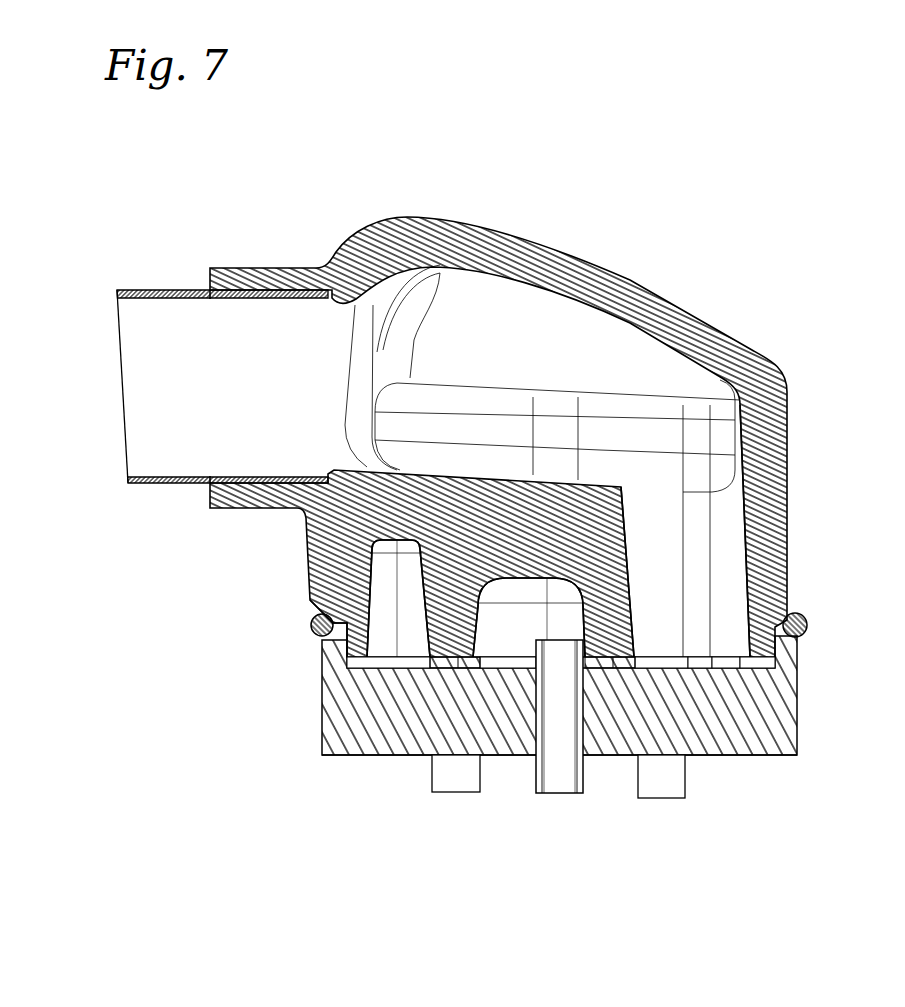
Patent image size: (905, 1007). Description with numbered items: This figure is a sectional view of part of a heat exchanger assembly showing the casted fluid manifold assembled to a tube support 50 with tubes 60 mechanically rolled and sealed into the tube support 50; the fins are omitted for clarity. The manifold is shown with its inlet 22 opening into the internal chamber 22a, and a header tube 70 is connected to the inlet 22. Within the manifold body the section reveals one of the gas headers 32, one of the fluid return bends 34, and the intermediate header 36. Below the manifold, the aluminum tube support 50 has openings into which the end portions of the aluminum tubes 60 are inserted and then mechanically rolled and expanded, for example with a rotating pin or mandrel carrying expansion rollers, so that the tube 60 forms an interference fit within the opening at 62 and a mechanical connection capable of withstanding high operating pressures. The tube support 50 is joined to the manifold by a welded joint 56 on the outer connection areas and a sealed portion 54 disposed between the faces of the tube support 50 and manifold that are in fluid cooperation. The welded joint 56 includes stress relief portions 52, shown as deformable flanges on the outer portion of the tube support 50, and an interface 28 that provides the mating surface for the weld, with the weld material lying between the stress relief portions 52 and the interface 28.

The inlet 22 is at (238, 266).
The internal chamber 22a is at (500, 307).
The header tube 70 is at (182, 290).
The intermediate header 36 is at (378, 567).
The fluid return bend 34 is at (563, 612).
The gas header 32 is at (725, 585).
The interface 28 is at (312, 607).
The welded joint 56 is at (322, 637).
The stress relief portion 52 is at (324, 660).
The tube support 50 is at (745, 755).
The sealed portion 54 is at (460, 663).
The tube 60 is at (542, 743).
The interference fit 62 is at (540, 740).